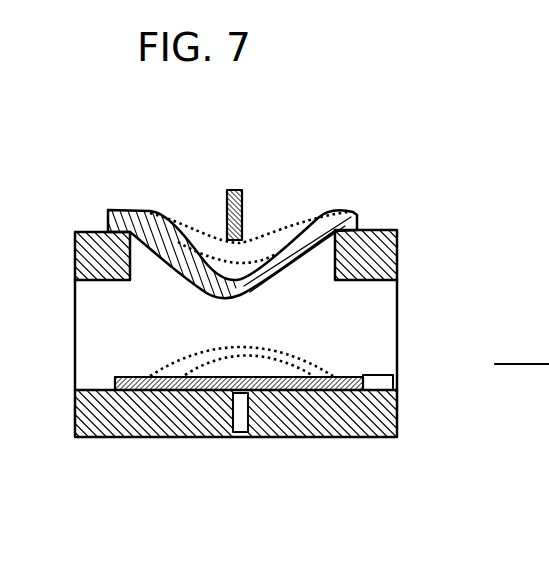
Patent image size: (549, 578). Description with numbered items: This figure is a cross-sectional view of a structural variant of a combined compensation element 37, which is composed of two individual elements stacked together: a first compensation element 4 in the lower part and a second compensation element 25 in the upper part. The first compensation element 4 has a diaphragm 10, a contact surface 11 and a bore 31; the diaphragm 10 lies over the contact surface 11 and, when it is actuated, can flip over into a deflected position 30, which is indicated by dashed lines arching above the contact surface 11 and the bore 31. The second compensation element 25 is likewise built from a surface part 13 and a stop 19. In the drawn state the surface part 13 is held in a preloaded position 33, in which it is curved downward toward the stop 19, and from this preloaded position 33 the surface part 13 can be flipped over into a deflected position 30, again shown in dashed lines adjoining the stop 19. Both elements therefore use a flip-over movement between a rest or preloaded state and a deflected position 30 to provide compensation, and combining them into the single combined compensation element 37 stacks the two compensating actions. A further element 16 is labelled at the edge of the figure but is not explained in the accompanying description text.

The first compensation element 4 is at (318, 440).
The diaphragm 10 is at (393, 375).
The contact surface 11 is at (177, 391).
The surface part 13 is at (349, 205).
The lead 16 is at (548, 320).
The stop 19 is at (242, 190).
The second compensation element 25 is at (184, 196).
The deflected position 30 is at (158, 210).
The bore 31 is at (242, 434).
The preloaded position 33 is at (277, 273).
The combined compensation element 37 is at (76, 229).